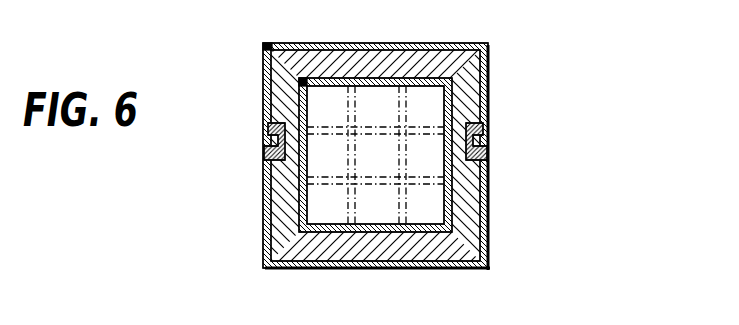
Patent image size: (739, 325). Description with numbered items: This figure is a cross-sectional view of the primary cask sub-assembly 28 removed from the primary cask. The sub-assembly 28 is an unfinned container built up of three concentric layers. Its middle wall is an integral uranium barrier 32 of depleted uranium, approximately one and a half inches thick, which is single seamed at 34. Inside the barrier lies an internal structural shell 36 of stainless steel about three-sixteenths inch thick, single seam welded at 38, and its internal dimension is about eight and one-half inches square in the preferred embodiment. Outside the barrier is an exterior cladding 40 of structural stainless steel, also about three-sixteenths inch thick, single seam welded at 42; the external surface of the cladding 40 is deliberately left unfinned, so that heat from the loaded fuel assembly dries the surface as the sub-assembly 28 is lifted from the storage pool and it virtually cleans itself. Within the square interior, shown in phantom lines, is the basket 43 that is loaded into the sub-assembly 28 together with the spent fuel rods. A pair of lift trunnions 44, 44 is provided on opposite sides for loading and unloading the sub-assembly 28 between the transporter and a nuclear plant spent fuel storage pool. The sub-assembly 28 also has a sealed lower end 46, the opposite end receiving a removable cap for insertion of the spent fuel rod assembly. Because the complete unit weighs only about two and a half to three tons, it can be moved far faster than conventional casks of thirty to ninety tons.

The primary cask sub-assembly 28 is at (500, 187).
The uranium barrier 32 is at (396, 63).
The single seam of uranium barrier 34 is at (283, 64).
The internal structural shell 36 is at (307, 173).
The single seam weld of internal shell 38 is at (300, 80).
The exterior cladding 40 is at (487, 67).
The single seam weld of exterior cladding 42 is at (267, 45).
The basket 43 is at (418, 126).
The lift trunnions 44 is at (274, 146).
The sealed lower end 46 is at (363, 163).